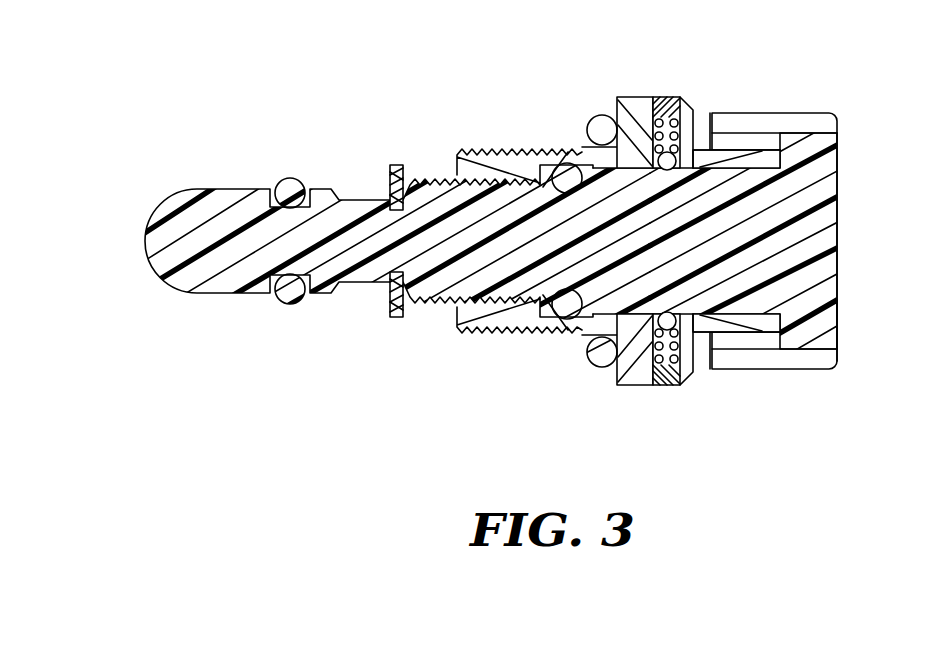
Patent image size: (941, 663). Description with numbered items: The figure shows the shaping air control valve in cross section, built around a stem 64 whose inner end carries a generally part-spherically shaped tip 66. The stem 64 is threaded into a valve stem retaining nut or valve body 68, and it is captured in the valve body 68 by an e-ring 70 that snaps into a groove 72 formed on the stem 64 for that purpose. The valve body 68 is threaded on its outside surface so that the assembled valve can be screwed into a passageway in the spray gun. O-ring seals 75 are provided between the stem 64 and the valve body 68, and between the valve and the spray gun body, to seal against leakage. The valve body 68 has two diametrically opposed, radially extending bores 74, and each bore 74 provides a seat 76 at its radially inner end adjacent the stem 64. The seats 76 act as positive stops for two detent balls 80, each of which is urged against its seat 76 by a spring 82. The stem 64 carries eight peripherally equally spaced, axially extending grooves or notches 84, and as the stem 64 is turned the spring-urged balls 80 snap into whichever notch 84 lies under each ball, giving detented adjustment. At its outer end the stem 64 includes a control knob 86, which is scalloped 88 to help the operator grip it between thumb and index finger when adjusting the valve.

The stem 64 is at (848, 161).
The part-spherically shaped tip 66 is at (177, 291).
The valve body 68 is at (647, 92).
The e-ring 70 is at (398, 170).
The groove 72 is at (388, 185).
The radially extending bore 74 is at (667, 120).
The O-ring seal 75 is at (293, 302).
The seat 76 is at (628, 108).
The detent ball 80 is at (699, 112).
The spring 82 is at (659, 156).
The grooves or notches 84 is at (613, 150).
The control knob 86 is at (827, 330).
The scalloped 88 is at (795, 130).